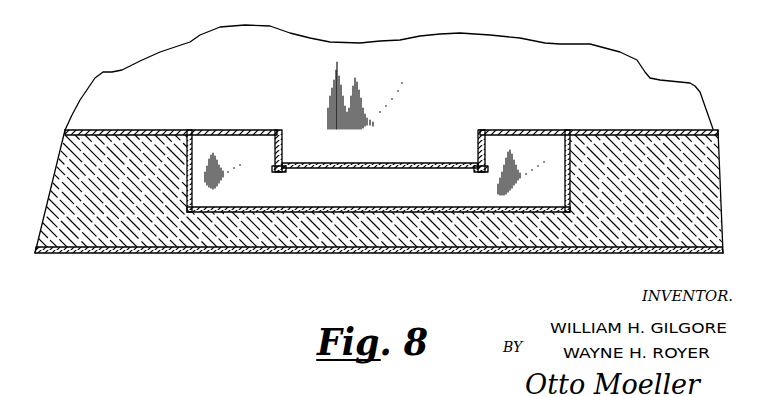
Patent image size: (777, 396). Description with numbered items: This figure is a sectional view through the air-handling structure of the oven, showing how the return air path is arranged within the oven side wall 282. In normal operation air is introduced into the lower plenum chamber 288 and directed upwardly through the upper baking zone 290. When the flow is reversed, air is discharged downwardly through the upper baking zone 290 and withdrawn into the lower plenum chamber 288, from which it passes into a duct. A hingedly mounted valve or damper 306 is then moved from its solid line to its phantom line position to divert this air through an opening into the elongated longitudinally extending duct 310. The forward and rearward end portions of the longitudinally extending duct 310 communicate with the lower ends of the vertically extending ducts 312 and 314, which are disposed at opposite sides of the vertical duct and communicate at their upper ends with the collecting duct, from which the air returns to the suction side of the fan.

The oven side wall 282 is at (421, 253).
The lower plenum chamber 288 is at (477, 86).
The upper baking zone 290 is at (305, 128).
The hingedly mounted valve or damper 306 is at (396, 163).
The elongated longitudinally extending duct 310 is at (348, 193).
The vertically extending duct 312 is at (527, 147).
The vertically extending duct 314 is at (237, 145).